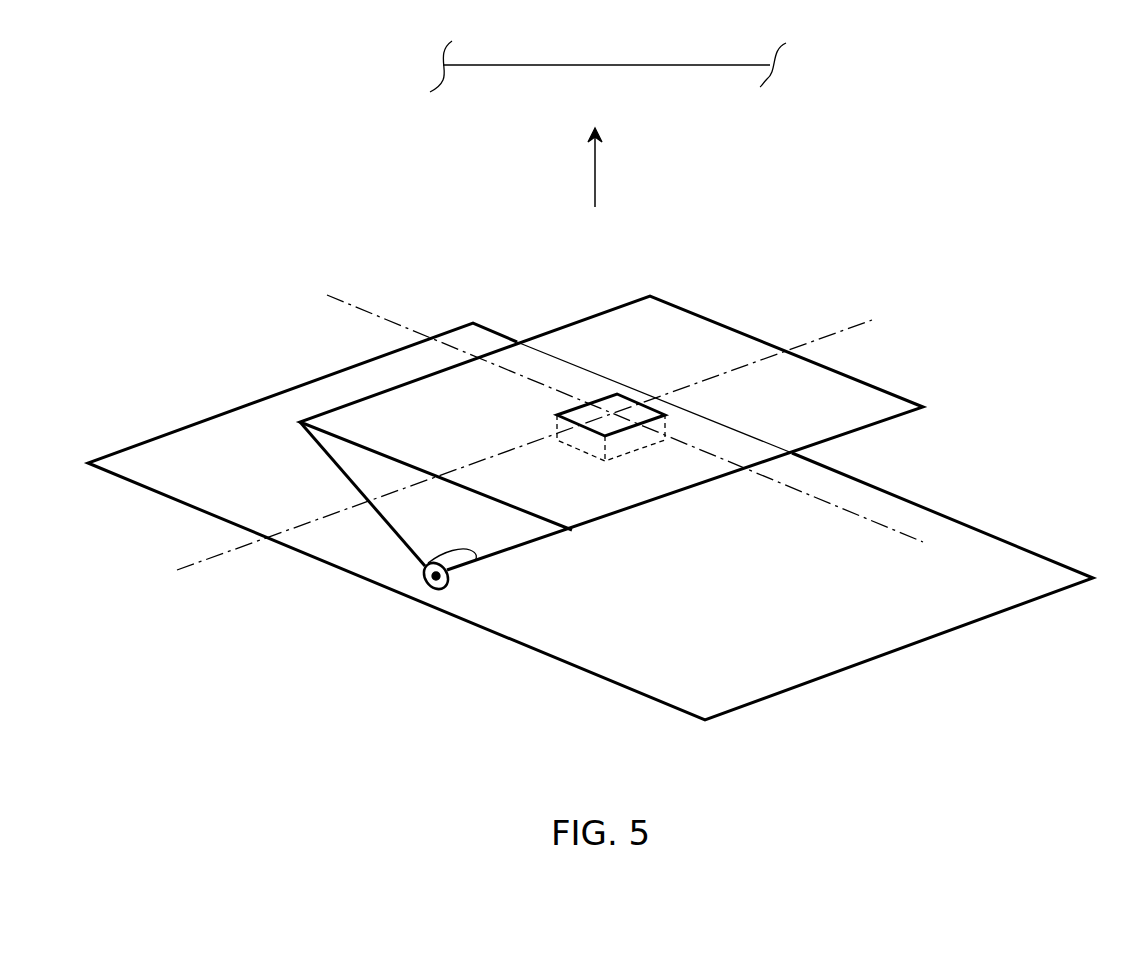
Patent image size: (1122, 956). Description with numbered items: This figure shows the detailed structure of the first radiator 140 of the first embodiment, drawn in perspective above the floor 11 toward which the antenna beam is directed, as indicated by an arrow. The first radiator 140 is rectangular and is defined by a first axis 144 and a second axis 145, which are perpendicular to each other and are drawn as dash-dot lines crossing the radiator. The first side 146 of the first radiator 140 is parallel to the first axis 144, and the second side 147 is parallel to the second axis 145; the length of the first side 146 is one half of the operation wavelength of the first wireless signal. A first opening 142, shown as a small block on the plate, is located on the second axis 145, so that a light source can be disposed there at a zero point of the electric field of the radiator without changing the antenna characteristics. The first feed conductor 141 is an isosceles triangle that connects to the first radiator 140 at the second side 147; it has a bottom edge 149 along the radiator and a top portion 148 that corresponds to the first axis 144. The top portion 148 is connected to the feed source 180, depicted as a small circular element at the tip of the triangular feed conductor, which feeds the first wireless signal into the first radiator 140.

The floor 11 is at (718, 65).
The first radiator 140 is at (665, 322).
The first feed conductor 141 is at (410, 522).
The first opening 142 is at (603, 397).
The first axis 144 is at (858, 323).
The second axis 145 is at (912, 538).
The first side 146 is at (607, 518).
The second side 147 is at (365, 443).
The top portion 148 is at (473, 557).
The bottom edge 149 is at (528, 515).
The feed source 180 is at (420, 592).